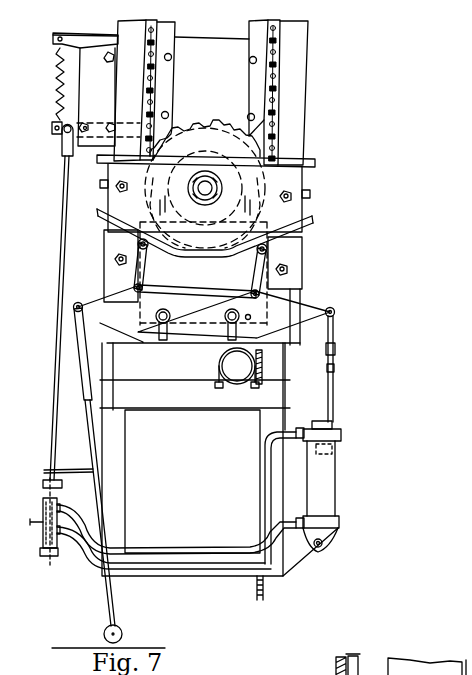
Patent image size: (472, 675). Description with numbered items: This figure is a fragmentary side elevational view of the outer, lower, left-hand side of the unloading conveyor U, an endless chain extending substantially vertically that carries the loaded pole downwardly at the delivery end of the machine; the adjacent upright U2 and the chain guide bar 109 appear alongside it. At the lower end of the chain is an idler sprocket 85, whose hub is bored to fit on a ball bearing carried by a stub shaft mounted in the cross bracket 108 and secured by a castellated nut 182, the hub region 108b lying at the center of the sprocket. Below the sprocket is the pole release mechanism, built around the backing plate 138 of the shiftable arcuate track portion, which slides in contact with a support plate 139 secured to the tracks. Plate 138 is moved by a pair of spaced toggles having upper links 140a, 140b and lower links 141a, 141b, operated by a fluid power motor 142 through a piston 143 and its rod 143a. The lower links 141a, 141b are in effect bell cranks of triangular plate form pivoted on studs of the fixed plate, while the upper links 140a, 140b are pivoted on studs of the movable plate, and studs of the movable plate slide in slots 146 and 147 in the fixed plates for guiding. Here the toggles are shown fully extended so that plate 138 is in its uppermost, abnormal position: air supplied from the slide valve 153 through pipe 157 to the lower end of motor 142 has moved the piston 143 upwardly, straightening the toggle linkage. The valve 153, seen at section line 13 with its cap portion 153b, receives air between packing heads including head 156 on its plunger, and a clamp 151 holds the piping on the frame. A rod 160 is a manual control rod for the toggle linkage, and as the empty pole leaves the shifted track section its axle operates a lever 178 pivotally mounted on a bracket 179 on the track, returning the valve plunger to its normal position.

The chain guide bar 109 is at (256, 80).
The unloading conveyor U is at (147, 50).
The right upright U2 is at (274, 62).
The bracket 179 is at (90, 47).
The lever 178 is at (77, 123).
The idler sprocket 85 is at (202, 129).
The hub 108b is at (207, 182).
The castellated nut 182 is at (198, 196).
The cross bracket 108 is at (305, 190).
The upper link 140b is at (280, 284).
The upper link 140a is at (104, 250).
The support plate 139 is at (302, 246).
The slot 146 is at (206, 295).
The slot 147 is at (228, 335).
The backing plate 138 is at (300, 298).
The lower link 141a is at (90, 295).
The lower link 141b is at (334, 312).
The manual control rod 160 is at (87, 401).
The piston rod 143a is at (334, 367).
The piston 143 is at (338, 461).
The fluid power motor 142 is at (338, 490).
The packing head 156 is at (266, 480).
The pipe 157 is at (199, 550).
The clamp 151 is at (236, 381).
The section line 13- 13 is at (57, 478).
The valve cap 153b is at (59, 488).
The slide valve 153 is at (60, 558).